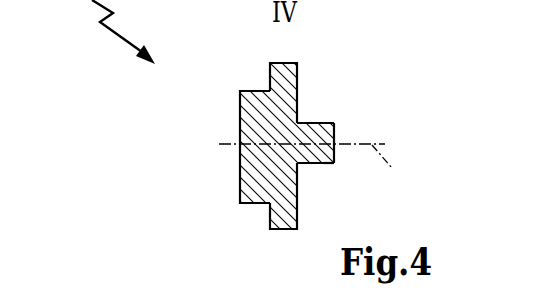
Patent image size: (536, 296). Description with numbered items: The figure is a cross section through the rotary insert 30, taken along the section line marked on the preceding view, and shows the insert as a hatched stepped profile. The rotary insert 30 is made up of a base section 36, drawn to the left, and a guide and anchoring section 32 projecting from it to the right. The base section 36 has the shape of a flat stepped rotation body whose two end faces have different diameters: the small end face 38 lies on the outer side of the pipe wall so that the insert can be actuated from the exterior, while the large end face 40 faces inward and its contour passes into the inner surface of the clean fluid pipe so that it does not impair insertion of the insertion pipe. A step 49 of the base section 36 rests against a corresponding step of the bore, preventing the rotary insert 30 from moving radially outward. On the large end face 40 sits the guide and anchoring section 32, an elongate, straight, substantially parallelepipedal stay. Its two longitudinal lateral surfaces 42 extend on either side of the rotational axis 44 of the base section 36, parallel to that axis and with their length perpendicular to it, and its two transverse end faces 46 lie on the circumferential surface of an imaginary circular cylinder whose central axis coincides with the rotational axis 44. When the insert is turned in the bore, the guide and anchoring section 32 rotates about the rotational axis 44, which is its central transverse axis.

The rotary insert 30 is at (86, 290).
The guide and anchoring section 32 is at (330, 157).
The base section 36 is at (257, 118).
The small end face 38 is at (240, 177).
The large end face 40 is at (298, 76).
The longitudinal lateral surfaces 42 is at (311, 116).
The rotational axis 44 is at (389, 171).
The transverse end faces 46 is at (319, 140).
The step 49 is at (270, 213).